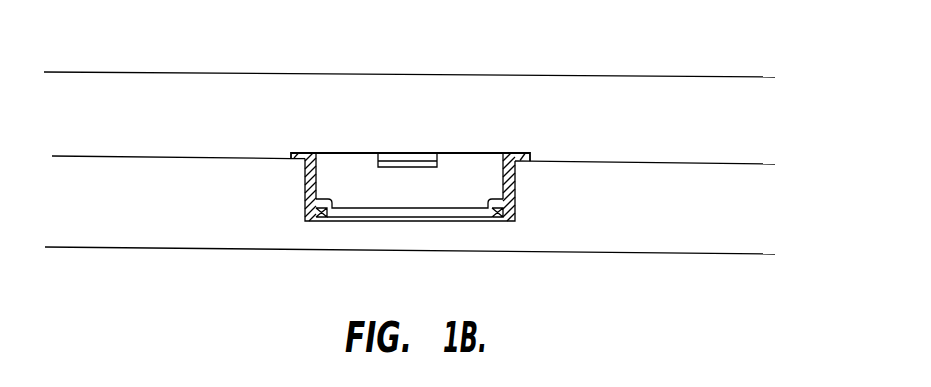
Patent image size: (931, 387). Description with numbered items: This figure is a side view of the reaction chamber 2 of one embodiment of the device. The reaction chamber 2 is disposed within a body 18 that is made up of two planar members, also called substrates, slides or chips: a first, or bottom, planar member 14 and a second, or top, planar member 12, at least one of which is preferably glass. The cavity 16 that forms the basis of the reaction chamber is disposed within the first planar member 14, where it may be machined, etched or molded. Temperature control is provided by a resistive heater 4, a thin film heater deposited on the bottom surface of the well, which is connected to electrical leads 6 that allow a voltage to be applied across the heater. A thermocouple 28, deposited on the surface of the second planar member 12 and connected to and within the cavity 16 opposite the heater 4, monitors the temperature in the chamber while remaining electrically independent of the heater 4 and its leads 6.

The reaction chamber 2 is at (88, 26).
The resistive heater 4 is at (428, 215).
The electrical leads 6 is at (307, 222).
The second planar member 12 is at (238, 82).
The first planar member 14 is at (192, 232).
The cavity 16 is at (492, 184).
The body 18 is at (812, 68).
The thermocouple 28 is at (418, 155).